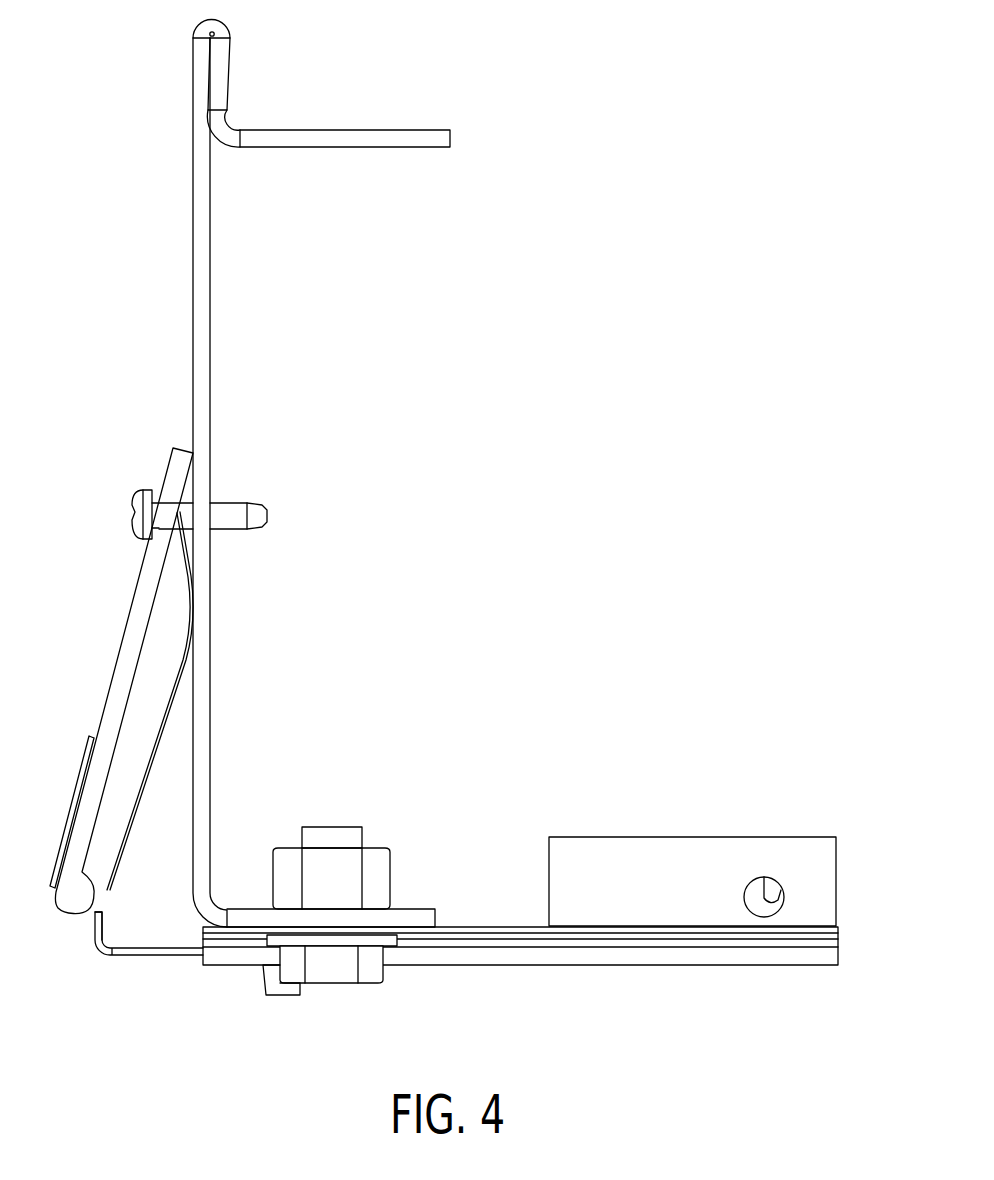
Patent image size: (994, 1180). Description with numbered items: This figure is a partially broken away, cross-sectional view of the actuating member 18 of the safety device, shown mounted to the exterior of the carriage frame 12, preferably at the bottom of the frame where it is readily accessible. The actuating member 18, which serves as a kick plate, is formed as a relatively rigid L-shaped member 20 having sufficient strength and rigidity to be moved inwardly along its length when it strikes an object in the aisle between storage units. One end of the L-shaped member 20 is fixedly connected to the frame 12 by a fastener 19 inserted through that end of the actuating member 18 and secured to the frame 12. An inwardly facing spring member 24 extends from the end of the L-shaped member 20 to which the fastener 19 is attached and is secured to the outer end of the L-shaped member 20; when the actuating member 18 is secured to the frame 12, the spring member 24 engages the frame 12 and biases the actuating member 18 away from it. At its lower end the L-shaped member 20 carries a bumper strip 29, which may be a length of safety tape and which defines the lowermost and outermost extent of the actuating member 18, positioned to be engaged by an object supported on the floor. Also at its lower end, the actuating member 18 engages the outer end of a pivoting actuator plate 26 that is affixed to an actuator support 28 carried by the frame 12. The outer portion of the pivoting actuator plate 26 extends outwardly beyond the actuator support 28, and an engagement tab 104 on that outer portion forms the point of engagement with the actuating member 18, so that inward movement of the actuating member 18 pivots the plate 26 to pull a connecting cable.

The carriage frame 12 is at (193, 218).
The actuating member 18 is at (107, 681).
The fastener 19 is at (237, 502).
The L-shaped member 20 is at (118, 675).
The spring member 24 is at (145, 773).
The pivoting actuator plate 26 is at (97, 953).
The actuator support 28 is at (628, 795).
The bumper strip 29 is at (73, 805).
The engagement tab 104 is at (102, 927).